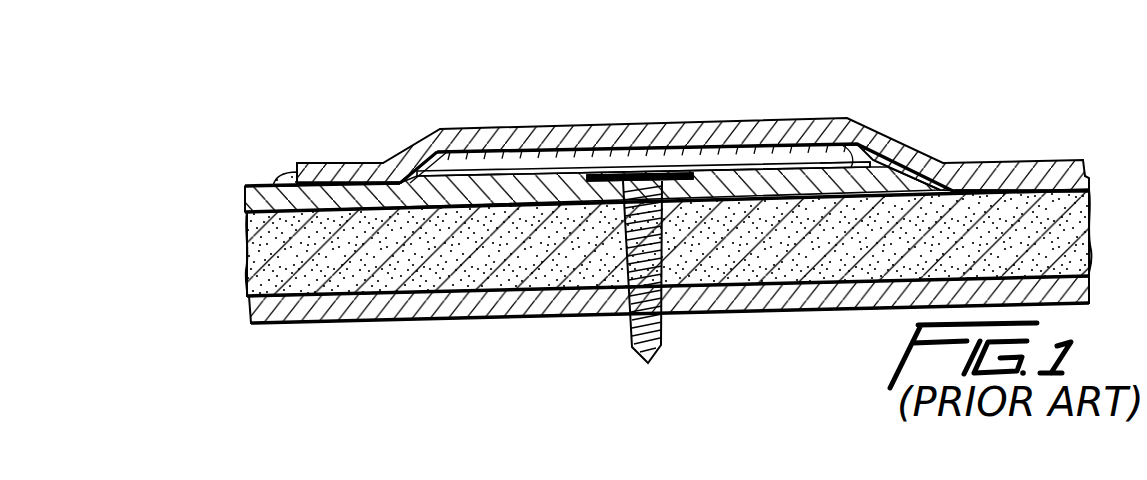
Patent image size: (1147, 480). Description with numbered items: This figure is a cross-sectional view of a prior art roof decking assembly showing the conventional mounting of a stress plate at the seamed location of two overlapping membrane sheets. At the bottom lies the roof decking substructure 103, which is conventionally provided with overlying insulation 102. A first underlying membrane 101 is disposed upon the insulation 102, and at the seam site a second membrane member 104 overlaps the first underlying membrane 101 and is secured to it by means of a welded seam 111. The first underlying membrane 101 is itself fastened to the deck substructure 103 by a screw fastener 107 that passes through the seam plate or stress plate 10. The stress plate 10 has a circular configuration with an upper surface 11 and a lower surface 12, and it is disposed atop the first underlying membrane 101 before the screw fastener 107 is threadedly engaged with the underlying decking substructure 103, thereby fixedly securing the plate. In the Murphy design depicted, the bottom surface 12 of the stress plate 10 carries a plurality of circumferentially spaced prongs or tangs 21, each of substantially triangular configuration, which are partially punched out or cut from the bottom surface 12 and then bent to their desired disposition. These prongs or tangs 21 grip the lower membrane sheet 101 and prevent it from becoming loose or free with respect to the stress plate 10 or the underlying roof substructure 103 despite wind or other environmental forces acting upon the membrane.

The stress plate 10 is at (493, 148).
The upper surface 11 is at (603, 148).
The lower surface 12 is at (852, 177).
The prongs or tangs 21 is at (498, 207).
The first underlying membrane 101 is at (255, 186).
The insulation 102 is at (268, 252).
The roof decking substructure 103 is at (257, 327).
The second membrane member 104 is at (713, 122).
The screw fastener 107 is at (667, 320).
The welded seam 111 is at (284, 183).